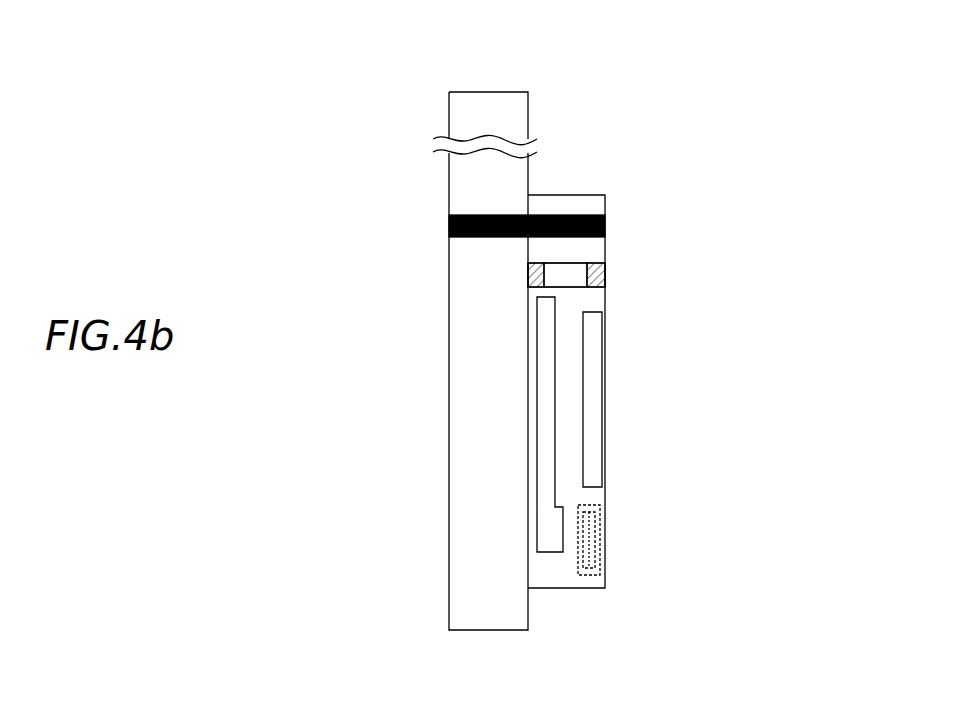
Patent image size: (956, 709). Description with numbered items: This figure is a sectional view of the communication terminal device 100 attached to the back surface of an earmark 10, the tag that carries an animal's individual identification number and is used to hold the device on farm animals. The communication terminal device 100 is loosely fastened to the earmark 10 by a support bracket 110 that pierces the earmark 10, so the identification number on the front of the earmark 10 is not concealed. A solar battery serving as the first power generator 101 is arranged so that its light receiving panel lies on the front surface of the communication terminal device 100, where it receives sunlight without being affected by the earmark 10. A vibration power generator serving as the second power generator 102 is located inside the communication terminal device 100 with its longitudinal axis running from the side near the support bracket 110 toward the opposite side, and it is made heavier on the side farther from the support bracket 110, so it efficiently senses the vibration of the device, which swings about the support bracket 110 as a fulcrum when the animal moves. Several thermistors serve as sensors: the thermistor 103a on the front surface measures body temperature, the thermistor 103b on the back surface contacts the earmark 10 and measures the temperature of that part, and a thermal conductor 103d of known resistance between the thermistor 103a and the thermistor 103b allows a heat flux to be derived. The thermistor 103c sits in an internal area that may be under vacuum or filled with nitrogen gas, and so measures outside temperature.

The earmark 10 is at (467, 108).
The communication terminal device 100 is at (555, 203).
The support bracket 110 is at (587, 213).
The first power generator 101 is at (593, 432).
The second power generator 102 is at (545, 548).
The thermistor 103a is at (603, 280).
The thermistor 103b is at (526, 277).
The thermistor 103c is at (590, 548).
The thermal conductor 103d is at (572, 272).